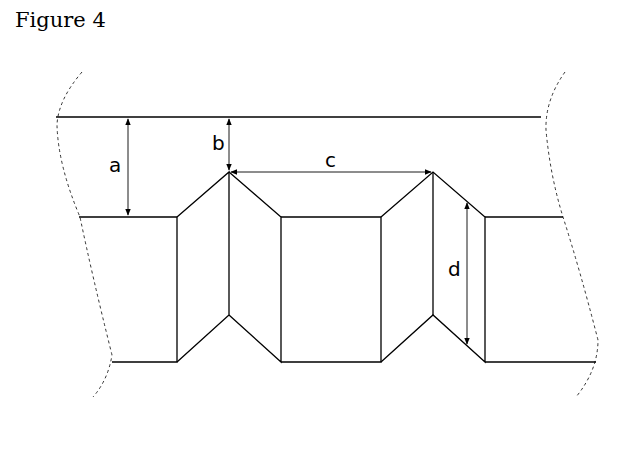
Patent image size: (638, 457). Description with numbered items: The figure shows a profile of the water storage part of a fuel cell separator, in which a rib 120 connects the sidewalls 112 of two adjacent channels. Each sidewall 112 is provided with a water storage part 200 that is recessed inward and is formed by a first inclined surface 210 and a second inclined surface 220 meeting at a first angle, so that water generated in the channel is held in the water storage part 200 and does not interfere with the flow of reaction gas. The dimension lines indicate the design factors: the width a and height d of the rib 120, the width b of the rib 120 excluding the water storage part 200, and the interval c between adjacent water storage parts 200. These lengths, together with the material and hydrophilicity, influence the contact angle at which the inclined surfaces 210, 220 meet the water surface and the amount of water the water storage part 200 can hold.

The rib 120 is at (478, 136).
The sidewall 112 is at (518, 330).
The water storage part 200 is at (326, 309).
The first inclined surface 210 is at (190, 339).
The second inclined surface 220 is at (259, 292).